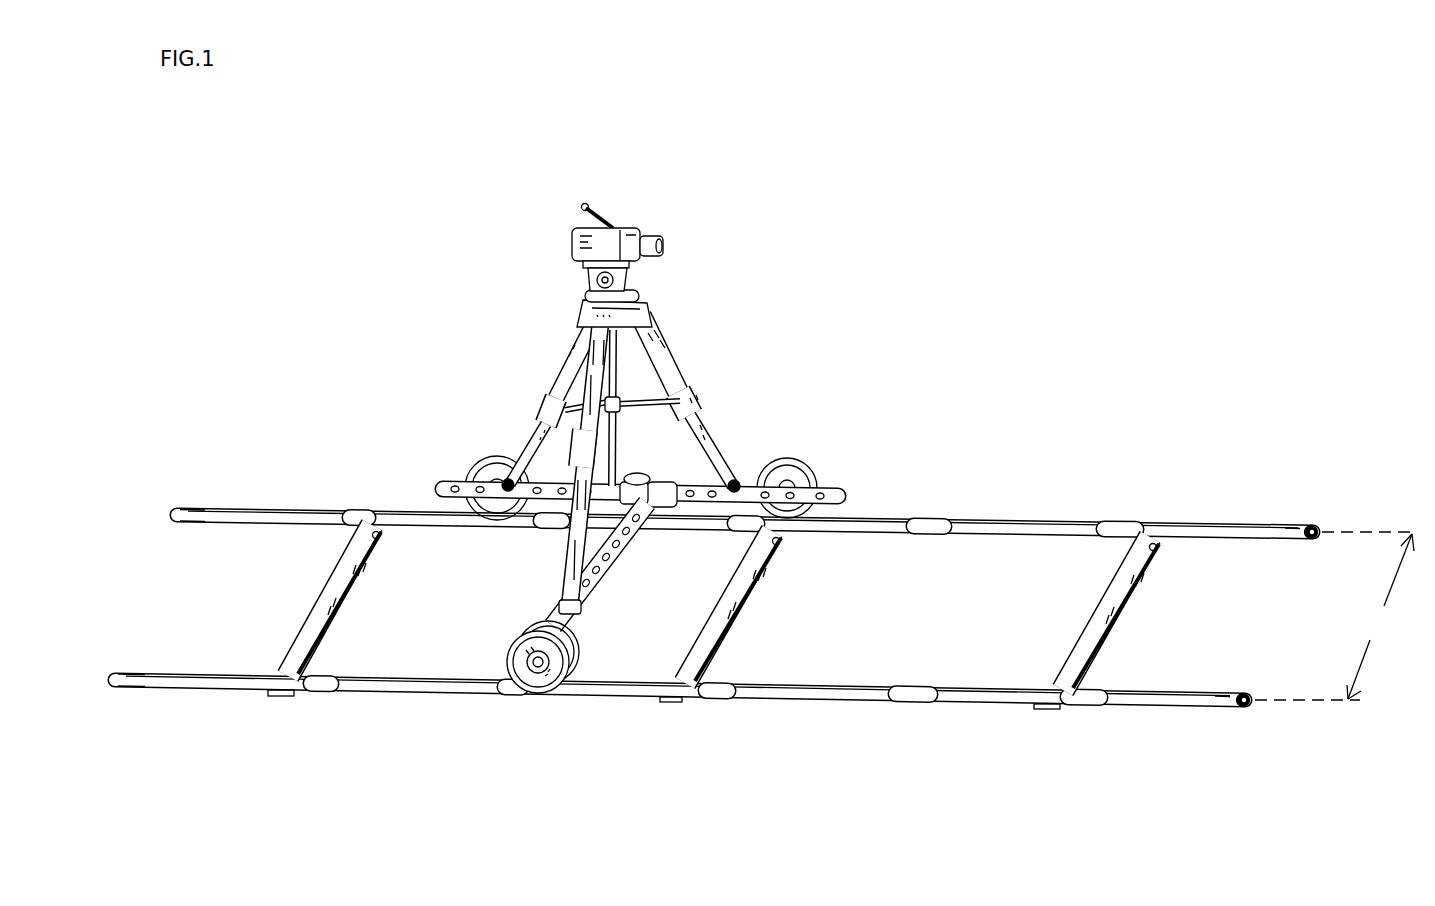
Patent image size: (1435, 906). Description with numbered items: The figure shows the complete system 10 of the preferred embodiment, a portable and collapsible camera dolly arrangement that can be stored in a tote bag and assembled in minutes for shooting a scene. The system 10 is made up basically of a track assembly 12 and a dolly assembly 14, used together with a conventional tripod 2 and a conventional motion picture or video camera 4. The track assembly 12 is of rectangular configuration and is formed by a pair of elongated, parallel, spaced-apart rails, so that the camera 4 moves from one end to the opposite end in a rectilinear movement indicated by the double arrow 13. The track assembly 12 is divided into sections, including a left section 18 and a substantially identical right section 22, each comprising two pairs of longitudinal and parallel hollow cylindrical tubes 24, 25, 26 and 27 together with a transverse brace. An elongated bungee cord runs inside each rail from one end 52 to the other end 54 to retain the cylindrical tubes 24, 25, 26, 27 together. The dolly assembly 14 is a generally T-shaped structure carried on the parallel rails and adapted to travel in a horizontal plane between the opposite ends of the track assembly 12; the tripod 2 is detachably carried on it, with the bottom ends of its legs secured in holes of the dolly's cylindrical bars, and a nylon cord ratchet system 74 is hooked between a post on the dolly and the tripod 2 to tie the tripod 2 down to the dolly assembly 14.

The tripod 2 is at (621, 448).
The camera 4 is at (640, 216).
The system 10 is at (1046, 260).
The track assembly 12 is at (765, 594).
The double arrow 13 is at (482, 760).
The dolly assembly 14 is at (640, 597).
The left section 18 is at (300, 698).
The right section 22 is at (1072, 708).
The cylindrical tube 24 is at (232, 508).
The cylindrical tube 25 is at (173, 688).
The cylindrical tube 26 is at (437, 522).
The cylindrical tube 27 is at (398, 691).
The end of rail 52 is at (195, 523).
The other end of rail 54 is at (1128, 522).
The nylon cord ratchet system 74 is at (608, 450).